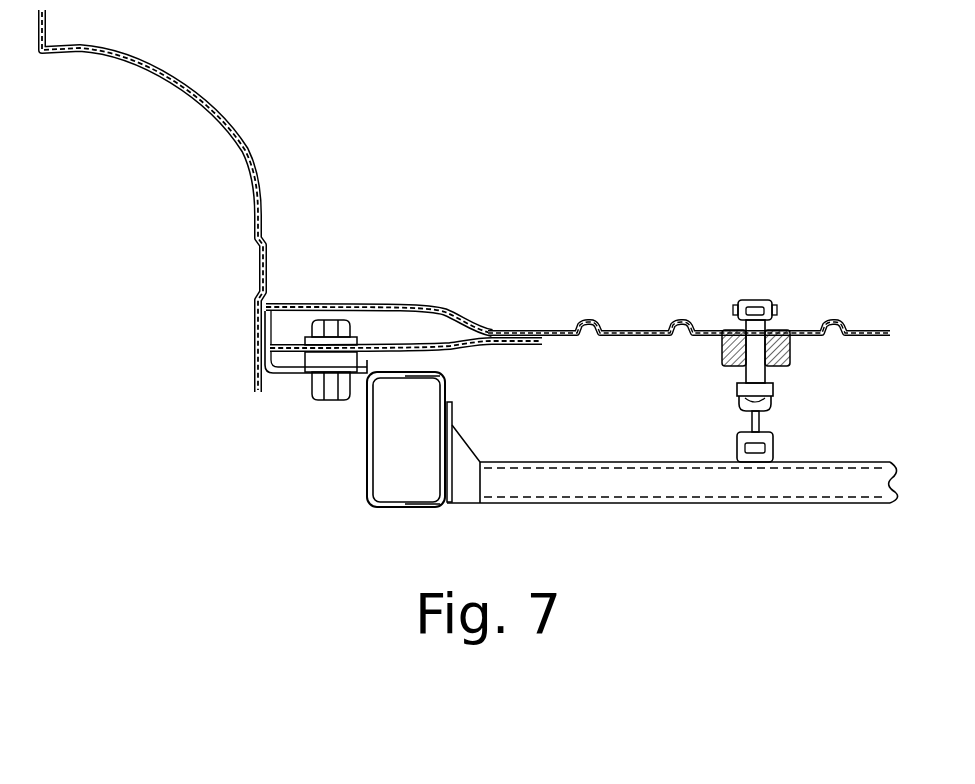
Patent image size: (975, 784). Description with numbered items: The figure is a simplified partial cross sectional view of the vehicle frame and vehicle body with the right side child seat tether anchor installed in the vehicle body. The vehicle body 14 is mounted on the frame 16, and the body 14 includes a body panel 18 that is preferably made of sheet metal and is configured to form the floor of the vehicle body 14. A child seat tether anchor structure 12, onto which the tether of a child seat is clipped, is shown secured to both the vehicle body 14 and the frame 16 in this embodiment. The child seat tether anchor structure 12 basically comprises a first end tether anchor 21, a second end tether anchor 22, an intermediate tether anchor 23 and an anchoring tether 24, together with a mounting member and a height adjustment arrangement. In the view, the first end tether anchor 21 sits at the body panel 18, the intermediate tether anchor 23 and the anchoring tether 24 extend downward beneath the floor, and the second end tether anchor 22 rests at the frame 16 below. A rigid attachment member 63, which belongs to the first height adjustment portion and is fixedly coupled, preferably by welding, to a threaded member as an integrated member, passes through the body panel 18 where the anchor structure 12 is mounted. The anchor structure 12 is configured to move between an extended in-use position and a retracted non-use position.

The child seat tether anchor structure 12 is at (800, 282).
The vehicle body 14 is at (237, 378).
The frame 16 is at (367, 507).
The body panel 18 is at (625, 330).
The first end tether anchor 21 is at (745, 298).
The second end tether anchor 22 is at (778, 440).
The intermediate tether anchor 23 is at (737, 398).
The anchoring tether 24 is at (748, 422).
The rigid attachment member 63 is at (790, 366).